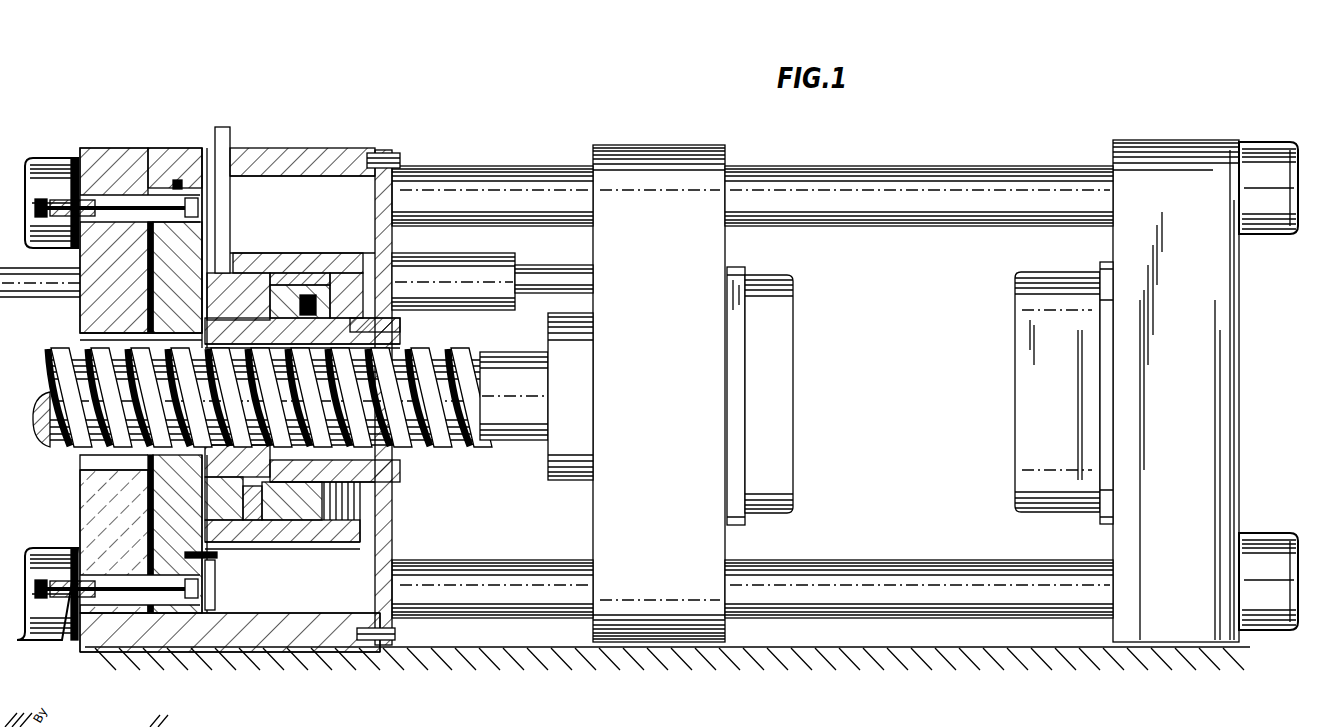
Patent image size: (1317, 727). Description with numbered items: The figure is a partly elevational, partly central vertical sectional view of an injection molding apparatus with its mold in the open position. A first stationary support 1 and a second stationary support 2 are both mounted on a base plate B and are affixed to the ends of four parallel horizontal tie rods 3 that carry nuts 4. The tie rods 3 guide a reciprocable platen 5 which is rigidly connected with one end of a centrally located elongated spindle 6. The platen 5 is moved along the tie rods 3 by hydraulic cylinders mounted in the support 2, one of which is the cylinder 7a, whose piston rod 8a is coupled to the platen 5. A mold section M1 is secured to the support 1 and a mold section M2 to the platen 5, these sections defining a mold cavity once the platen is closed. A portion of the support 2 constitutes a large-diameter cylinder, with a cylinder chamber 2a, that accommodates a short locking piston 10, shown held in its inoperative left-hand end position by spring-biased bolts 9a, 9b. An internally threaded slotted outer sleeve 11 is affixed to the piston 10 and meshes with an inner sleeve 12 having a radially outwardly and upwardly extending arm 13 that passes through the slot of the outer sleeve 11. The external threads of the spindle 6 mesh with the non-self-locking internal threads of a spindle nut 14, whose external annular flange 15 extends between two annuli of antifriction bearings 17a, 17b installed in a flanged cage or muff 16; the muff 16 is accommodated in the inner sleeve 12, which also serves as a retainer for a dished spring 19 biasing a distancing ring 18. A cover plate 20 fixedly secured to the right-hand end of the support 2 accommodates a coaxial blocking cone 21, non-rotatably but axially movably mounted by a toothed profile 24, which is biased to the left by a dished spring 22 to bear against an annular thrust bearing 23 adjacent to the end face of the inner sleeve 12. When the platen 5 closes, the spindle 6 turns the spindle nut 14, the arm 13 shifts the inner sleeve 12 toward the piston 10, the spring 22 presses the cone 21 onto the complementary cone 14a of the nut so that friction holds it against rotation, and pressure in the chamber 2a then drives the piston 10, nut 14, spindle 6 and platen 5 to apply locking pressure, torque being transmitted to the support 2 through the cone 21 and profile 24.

The first stationary support 1 is at (1170, 150).
The second stationary support 2 is at (140, 150).
The cylinder chamber 2a is at (144, 509).
The tie rods 3 is at (955, 177).
The nuts 4 is at (52, 168).
The platen 5 is at (672, 152).
The spindle 6 is at (515, 365).
The hydraulically operated cylinder 7a is at (502, 261).
The piston rod 8a is at (559, 280).
The spring-biased bolt 9a is at (105, 205).
The spring-biased bolt 9b is at (118, 603).
The locking piston 10 is at (180, 181).
The outer sleeve 11 is at (250, 258).
The inner sleeve 12 is at (275, 289).
The arm 13 is at (231, 141).
The spindle nut 14 is at (211, 335).
The complementary cone 14a is at (290, 515).
The external annular flange 15 is at (216, 290).
The cage or muff 16 is at (212, 501).
The antifriction bearing 17a is at (255, 524).
The antifriction bearing 17b is at (216, 588).
The distancing ring 18 is at (295, 299).
The dished spring 19 is at (330, 542).
The cover plate 20 is at (383, 153).
The cone 21 is at (400, 471).
The dished spring 22 is at (350, 290).
The annular thrust bearing 23 is at (320, 296).
The toothed profile 24 is at (398, 319).
The mold section M1 is at (1025, 376).
The mold section M2 is at (792, 318).
The base plate B is at (790, 652).